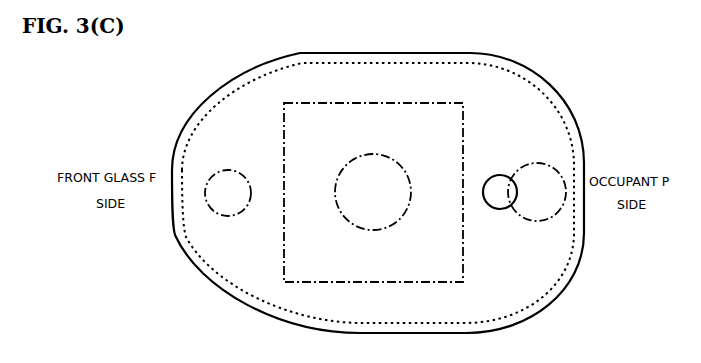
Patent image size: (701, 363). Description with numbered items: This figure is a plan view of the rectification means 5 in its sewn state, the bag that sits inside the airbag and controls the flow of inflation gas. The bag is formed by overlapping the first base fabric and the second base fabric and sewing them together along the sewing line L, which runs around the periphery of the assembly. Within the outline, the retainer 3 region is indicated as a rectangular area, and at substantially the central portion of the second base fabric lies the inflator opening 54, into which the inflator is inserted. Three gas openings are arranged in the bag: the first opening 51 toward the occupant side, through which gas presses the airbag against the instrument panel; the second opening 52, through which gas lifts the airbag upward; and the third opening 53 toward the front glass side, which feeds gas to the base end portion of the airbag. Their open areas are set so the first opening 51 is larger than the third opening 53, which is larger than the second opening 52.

The rectification means 5 is at (553, 84).
The sewing line L is at (257, 300).
The retainer 3 is at (463, 255).
The first opening 51 is at (541, 164).
The second opening 52 is at (483, 192).
The third opening 53 is at (241, 171).
The inflator opening 54 is at (335, 192).